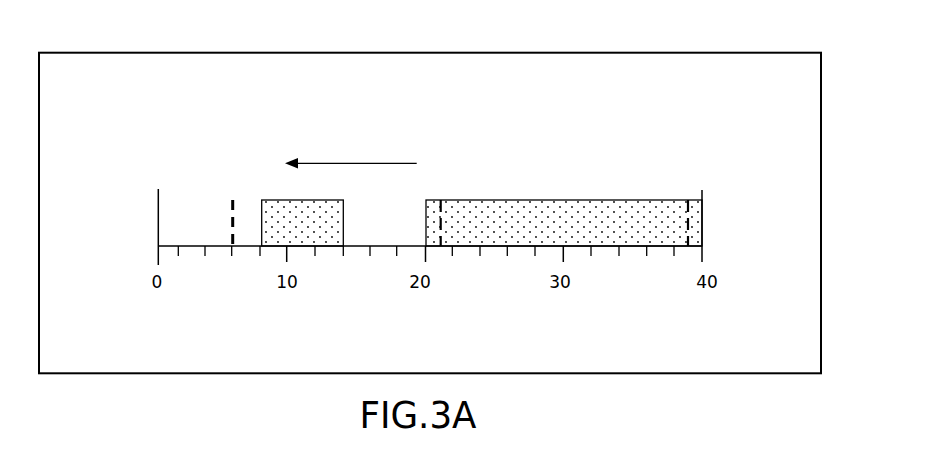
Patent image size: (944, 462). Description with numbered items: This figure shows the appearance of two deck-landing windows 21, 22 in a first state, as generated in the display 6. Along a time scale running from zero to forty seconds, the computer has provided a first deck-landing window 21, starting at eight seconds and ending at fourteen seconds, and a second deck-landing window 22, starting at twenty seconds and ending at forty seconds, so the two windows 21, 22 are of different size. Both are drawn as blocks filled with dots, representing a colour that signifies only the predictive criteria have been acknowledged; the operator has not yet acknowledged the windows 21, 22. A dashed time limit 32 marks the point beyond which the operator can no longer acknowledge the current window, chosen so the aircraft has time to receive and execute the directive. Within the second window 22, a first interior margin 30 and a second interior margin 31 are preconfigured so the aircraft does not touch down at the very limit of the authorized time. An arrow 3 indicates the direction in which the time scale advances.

The scrolling direction 3 is at (357, 157).
The display 6 is at (798, 288).
The first deck-landing window 21 is at (332, 235).
The second deck-landing window 22 is at (505, 230).
The first interior margin 30 is at (442, 212).
The second interior margin 31 is at (687, 217).
The time limit 32 is at (226, 217).